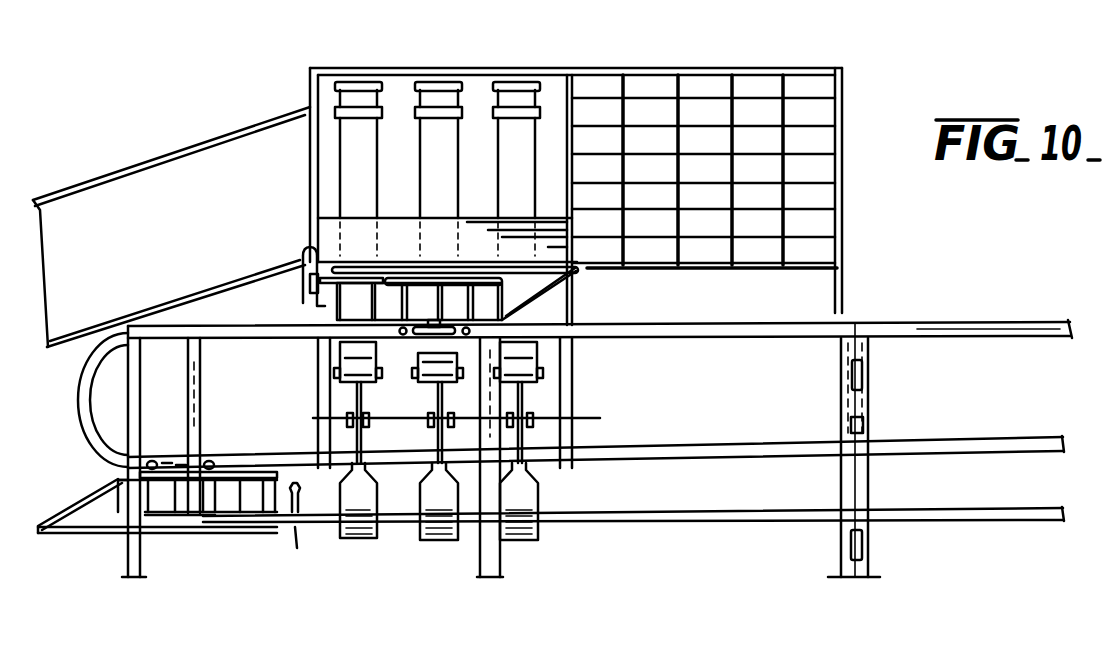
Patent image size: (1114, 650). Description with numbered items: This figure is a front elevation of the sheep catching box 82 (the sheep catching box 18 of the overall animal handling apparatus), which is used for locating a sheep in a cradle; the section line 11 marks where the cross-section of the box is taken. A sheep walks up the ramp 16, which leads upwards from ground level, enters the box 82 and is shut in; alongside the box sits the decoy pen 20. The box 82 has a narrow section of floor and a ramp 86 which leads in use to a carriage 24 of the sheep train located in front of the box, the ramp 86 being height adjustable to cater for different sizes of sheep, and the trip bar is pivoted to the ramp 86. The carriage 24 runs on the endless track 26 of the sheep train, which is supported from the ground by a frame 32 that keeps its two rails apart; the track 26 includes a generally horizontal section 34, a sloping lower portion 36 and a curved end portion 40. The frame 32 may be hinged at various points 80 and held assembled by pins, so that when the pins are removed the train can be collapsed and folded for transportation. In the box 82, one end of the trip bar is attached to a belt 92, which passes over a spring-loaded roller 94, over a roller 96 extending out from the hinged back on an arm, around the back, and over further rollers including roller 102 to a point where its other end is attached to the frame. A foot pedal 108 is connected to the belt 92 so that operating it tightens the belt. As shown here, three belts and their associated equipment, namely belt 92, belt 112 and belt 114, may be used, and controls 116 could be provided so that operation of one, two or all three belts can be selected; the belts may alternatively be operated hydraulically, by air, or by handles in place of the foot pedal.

The section line 11- 11 is at (407, 42).
The ramp 16 is at (206, 132).
The sheep catching box 18 is at (566, 70).
The decoy pen 20 is at (856, 73).
The carriage 24 is at (541, 306).
The endless track 26 is at (658, 341).
The frame 32 is at (872, 537).
The horizontal section 34 is at (972, 334).
The sloping lower portion 36 is at (936, 450).
The curved end portion 40 is at (98, 434).
The hinge point 80 is at (204, 388).
The catching box 82 is at (312, 70).
The ramp 86 is at (350, 228).
The belt 92 is at (352, 136).
The spring-loaded roller 94 is at (352, 110).
The roller 96 is at (466, 90).
The roller 102 is at (530, 386).
The foot pedal 108 is at (437, 501).
The belt 112 is at (430, 141).
The belt 114 is at (507, 146).
The controls 116 is at (554, 534).